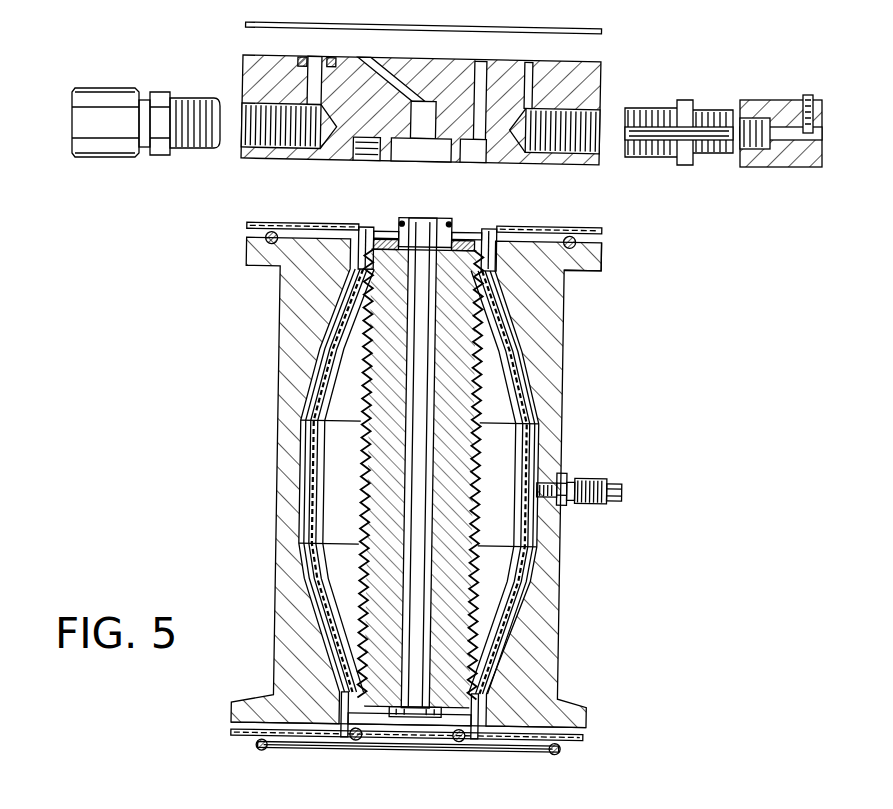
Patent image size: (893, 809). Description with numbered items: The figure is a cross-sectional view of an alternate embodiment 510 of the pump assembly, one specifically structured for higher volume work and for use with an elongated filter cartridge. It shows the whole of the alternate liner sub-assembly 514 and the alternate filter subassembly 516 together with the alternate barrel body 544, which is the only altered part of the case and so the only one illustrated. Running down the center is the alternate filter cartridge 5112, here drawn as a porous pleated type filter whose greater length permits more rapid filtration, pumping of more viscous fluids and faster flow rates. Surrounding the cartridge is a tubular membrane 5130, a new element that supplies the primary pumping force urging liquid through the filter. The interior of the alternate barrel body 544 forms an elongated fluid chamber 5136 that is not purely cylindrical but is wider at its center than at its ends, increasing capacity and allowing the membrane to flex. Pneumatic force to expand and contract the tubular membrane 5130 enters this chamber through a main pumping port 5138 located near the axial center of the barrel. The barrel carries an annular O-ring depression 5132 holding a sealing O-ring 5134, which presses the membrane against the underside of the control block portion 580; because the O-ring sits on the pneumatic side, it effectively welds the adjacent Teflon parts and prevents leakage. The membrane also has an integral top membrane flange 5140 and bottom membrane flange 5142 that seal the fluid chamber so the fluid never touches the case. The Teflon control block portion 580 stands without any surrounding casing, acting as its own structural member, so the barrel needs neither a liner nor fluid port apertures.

The alternate embodiment 510 is at (656, 327).
The alternate liner sub-assembly 514 is at (236, 67).
The alternate filter subassembly 516 is at (356, 392).
The alternate barrel body 544 is at (557, 366).
The alternate control block portion 580 is at (607, 80).
The alternate filter cartridge 5112 is at (367, 468).
The tubular membrane 5130 is at (484, 230).
The annular O-ring depression 5132 is at (585, 292).
The sealing O-ring 5134 is at (266, 240).
The elongated fluid chamber 5136 is at (488, 480).
The main pumping port 5138 is at (585, 510).
The top membrane flange 5140 is at (305, 222).
The bottom membrane flange 5142 is at (243, 735).